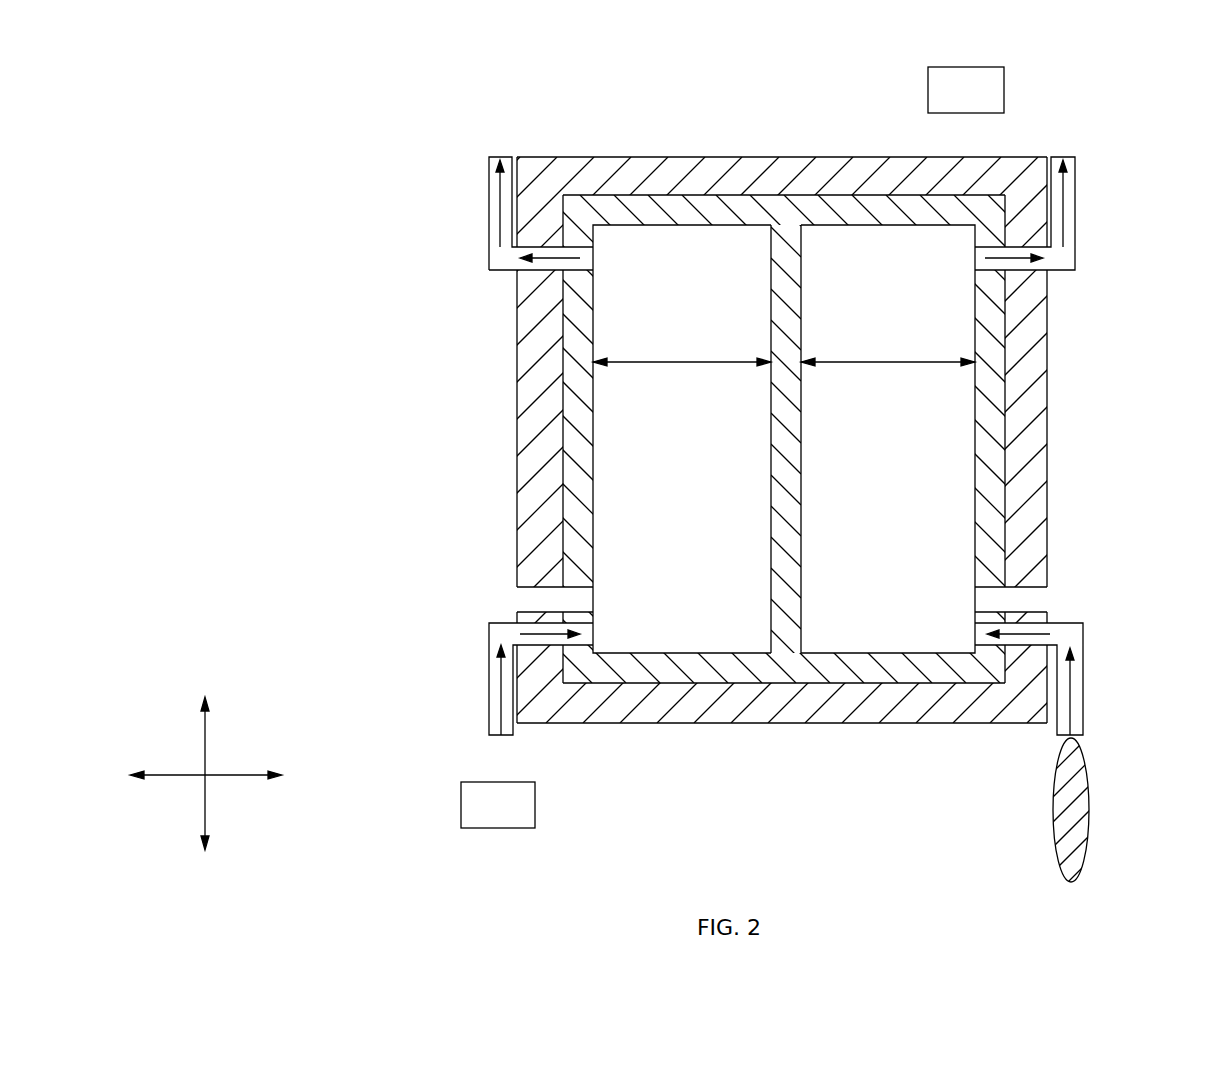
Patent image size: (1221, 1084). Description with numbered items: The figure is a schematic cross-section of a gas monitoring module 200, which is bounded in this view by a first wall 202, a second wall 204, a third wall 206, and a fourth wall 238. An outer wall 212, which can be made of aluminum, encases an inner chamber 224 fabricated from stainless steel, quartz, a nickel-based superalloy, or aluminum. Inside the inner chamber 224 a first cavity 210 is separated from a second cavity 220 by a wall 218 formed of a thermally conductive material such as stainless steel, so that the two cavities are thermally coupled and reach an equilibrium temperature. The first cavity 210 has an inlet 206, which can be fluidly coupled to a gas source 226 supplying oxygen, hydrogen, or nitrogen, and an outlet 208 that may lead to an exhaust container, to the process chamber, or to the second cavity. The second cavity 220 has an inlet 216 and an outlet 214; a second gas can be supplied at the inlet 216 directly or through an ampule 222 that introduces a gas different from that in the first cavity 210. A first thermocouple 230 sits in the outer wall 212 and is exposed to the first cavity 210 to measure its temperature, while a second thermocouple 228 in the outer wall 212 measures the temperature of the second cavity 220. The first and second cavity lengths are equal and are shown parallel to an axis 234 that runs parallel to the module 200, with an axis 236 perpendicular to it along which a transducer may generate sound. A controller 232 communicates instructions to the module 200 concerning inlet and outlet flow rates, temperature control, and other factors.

The gas monitoring module 200 is at (315, 108).
The first wall 202 is at (517, 420).
The second wall 204 is at (771, 157).
The inlet 206 is at (1047, 420).
The outlet 208 is at (489, 207).
The first cavity 210 is at (688, 467).
The outer wall 212 is at (563, 530).
The outlet 214 is at (1075, 205).
The inlet 216 is at (1083, 687).
The wall 218 is at (793, 514).
The second cavity 220 is at (903, 421).
The ampule 222 is at (1090, 808).
The inner chamber 224 is at (1008, 528).
The gas source 226 is at (502, 782).
The second thermocouple 228 is at (1072, 600).
The first thermocouple 230 is at (493, 597).
The controller 232 is at (966, 157).
The axis 234 is at (230, 775).
The axis 236 is at (207, 756).
The fourth wall 238 is at (782, 723).